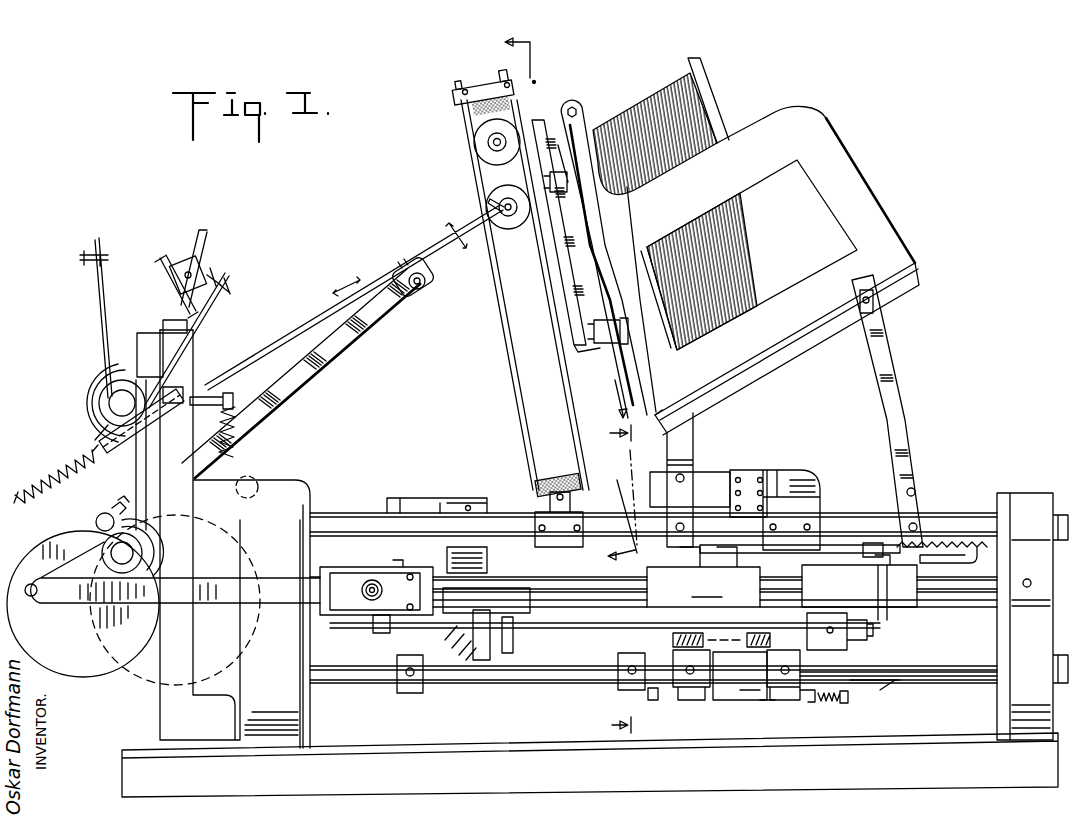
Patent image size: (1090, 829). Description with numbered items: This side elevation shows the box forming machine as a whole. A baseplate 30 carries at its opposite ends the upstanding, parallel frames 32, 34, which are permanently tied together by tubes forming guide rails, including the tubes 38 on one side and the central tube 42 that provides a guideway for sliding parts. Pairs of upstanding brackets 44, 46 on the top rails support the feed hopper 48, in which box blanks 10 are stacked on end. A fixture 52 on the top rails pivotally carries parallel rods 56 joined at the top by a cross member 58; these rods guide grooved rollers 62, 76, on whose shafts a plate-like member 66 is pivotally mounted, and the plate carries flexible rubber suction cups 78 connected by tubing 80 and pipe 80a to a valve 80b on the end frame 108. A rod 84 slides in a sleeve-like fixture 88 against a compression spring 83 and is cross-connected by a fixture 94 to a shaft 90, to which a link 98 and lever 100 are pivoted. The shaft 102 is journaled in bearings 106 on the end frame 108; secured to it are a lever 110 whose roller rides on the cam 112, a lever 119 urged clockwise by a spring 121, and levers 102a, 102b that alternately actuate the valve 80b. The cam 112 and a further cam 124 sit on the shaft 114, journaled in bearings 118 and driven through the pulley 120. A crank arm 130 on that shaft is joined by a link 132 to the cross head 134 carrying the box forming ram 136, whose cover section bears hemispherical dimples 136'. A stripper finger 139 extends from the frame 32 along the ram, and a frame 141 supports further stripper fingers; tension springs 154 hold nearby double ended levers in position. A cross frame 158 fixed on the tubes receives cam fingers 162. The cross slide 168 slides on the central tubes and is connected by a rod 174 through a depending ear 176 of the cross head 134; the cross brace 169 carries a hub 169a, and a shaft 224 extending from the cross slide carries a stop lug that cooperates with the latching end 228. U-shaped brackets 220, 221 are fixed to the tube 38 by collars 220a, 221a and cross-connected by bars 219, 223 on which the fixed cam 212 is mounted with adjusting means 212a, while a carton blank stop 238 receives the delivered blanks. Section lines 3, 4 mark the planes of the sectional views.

The section line 3- 3 is at (560, 301).
The section line 4- 4 is at (613, 557).
The box blanks 10 is at (650, 95).
The baseplate 30 is at (647, 745).
The frame 32 is at (311, 718).
The frame 34 is at (998, 709).
The tubes 38 is at (938, 514).
The tube 42 is at (957, 578).
The upstanding brackets 44 is at (692, 443).
The upstanding brackets 46 is at (892, 425).
The feed hopper 48 is at (875, 196).
The fixture 52 is at (545, 547).
The parallel rods 56 is at (540, 403).
The cross member 58 is at (450, 92).
The grooved roller 62 is at (473, 147).
The plate-like member 66 is at (568, 325).
The grooved roller 76 is at (505, 229).
The flexible rubber suction cups 78 is at (557, 172).
The tubing system 80 is at (198, 236).
The pipe 80a is at (178, 300).
The valve 80b is at (204, 270).
The compression spring 83 is at (35, 464).
The rod 84 is at (440, 238).
The sleeve-like fixture 88 is at (100, 426).
The shaft 90 is at (419, 289).
The fixture 94 is at (400, 258).
The link 98 is at (314, 374).
The lever 100 is at (95, 446).
The shaft 102 is at (110, 403).
The lever 102a is at (100, 322).
The lever 102b is at (206, 325).
The bearings 106 is at (92, 380).
The end frame 108 is at (192, 364).
The lever 110 is at (236, 472).
The cam 112 is at (72, 665).
The shaft 114 is at (102, 540).
The bearings 118 is at (95, 512).
The lever 119 is at (222, 396).
The drive pulley 120 is at (110, 505).
The spring 121 is at (236, 446).
The cam 124 is at (193, 548).
The crank arm 130 is at (80, 603).
The link 132 is at (212, 598).
The cross head 134 is at (362, 615).
The box forming ram 136 is at (486, 559).
The hemispherical dimples 136' is at (483, 491).
The stripper finger 139 is at (435, 498).
The frame 141 is at (413, 688).
The tension springs 154 is at (742, 690).
The cross frame 158 is at (783, 478).
The cam fingers 162 is at (718, 500).
The cross slide 168 is at (703, 577).
The cross brace 169 is at (859, 587).
The hub 169a is at (850, 647).
The rod 174 is at (552, 628).
The depending ear 176 is at (381, 633).
The cam 212 is at (668, 692).
The adjusting means 212a is at (880, 695).
The bar 219 is at (708, 692).
The U-shaped bracket 220 is at (672, 640).
The integral collar 220a is at (756, 702).
The U-shaped bracket 221 is at (905, 680).
The integral collar 221a is at (855, 683).
The bar 223 is at (800, 690).
The shaft 224 is at (848, 546).
The latching end 228 is at (977, 540).
The carton blank stop 238 is at (617, 690).